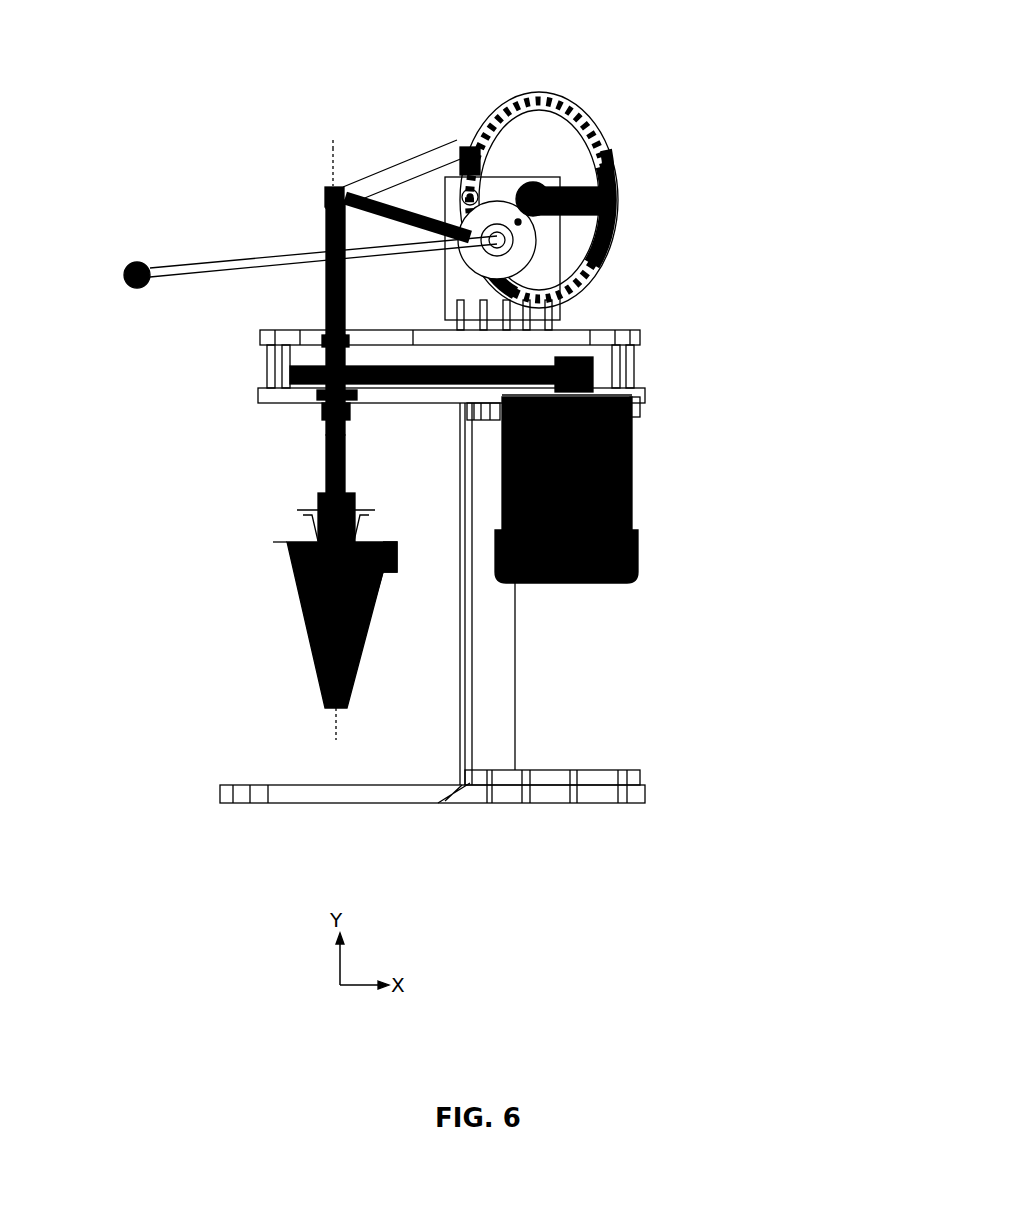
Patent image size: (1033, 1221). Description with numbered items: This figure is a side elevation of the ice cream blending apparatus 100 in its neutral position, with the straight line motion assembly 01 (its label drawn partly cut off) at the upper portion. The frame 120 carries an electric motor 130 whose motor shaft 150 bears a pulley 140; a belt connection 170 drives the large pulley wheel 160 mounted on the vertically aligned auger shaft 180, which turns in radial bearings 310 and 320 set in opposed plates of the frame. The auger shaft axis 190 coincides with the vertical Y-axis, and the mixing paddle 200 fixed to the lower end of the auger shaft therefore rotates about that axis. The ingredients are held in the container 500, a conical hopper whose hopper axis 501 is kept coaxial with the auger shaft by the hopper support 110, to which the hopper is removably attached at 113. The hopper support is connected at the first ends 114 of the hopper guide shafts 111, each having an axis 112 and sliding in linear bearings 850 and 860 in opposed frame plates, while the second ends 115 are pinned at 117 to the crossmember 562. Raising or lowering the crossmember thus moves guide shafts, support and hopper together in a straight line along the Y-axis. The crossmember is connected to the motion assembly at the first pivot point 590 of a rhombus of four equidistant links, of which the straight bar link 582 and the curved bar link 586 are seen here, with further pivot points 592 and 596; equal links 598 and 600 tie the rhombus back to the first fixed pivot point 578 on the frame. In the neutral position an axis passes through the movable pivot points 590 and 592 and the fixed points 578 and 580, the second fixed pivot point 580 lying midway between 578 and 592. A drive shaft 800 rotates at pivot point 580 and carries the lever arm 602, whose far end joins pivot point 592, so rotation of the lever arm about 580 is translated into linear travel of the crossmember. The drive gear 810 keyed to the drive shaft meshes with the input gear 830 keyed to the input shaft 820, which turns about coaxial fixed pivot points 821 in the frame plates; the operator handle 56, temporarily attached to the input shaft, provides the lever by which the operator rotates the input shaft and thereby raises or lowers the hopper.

The straight line motion assembly 01 is at (408, 62).
The ice cream blending apparatus 100 is at (797, 240).
The operator handle 56 is at (127, 287).
The hopper support 110 is at (385, 578).
The hopper guide shaft 111 is at (345, 300).
The guide shaft axis 112 is at (326, 157).
The hopper attachment 113 is at (398, 535).
The first ends of hopper guide shafts 114 is at (300, 535).
The second ends of hopper guide shafts 115 is at (322, 210).
The pin joint 117 is at (322, 203).
The frame 120 is at (650, 340).
The electric motor 130 is at (636, 525).
The pulley 140 is at (595, 360).
The motor shaft 150 is at (520, 390).
The pulley wheel 160 is at (265, 365).
The belt connection 170 is at (632, 430).
The auger shaft 180 is at (320, 427).
The auger shaft axis 190 is at (323, 470).
The mixing paddle 200 is at (318, 500).
The radial bearing 310 is at (328, 345).
The radial bearing 320 is at (290, 398).
The container 500 is at (298, 616).
The hopper axis 501 is at (345, 730).
The crossmember 562 is at (322, 197).
The first fixed pivot point 578 is at (478, 193).
The second fixed pivot point 580 is at (572, 188).
The link 582 is at (404, 150).
The link 586 is at (546, 90).
The first pivot point 590 is at (323, 190).
The movable pivot point 592 is at (618, 200).
The pivot point 596 is at (479, 147).
The link 598 is at (466, 216).
The link 600 is at (482, 158).
The lever arm 602 is at (622, 190).
The drive shaft 800 is at (616, 220).
The drive gear 810 is at (560, 178).
The input shaft 820 is at (540, 268).
The fixed pivot points of input shaft 821 is at (505, 240).
The input gear 830 is at (518, 222).
The linear bearing 850 is at (340, 347).
The linear bearing 860 is at (342, 400).